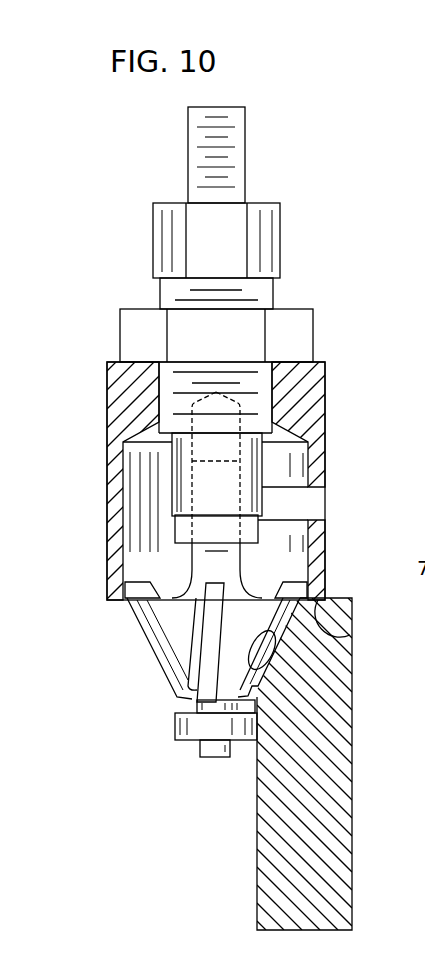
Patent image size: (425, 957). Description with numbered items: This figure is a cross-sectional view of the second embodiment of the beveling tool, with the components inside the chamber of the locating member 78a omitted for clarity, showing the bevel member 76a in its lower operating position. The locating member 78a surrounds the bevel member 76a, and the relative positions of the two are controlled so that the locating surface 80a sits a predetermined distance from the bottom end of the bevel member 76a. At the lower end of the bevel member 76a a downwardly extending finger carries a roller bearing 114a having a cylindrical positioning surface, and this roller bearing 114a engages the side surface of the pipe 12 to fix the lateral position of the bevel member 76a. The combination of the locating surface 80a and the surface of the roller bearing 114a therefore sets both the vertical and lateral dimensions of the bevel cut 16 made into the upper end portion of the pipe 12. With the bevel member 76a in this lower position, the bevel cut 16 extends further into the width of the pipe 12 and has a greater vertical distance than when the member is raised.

The locating member 78a is at (100, 554).
The bevel member 76a is at (158, 677).
The roller bearing 114a is at (175, 728).
The locating surface 80a is at (326, 637).
The bevel cut 16 is at (283, 664).
The pipe 12 is at (332, 710).